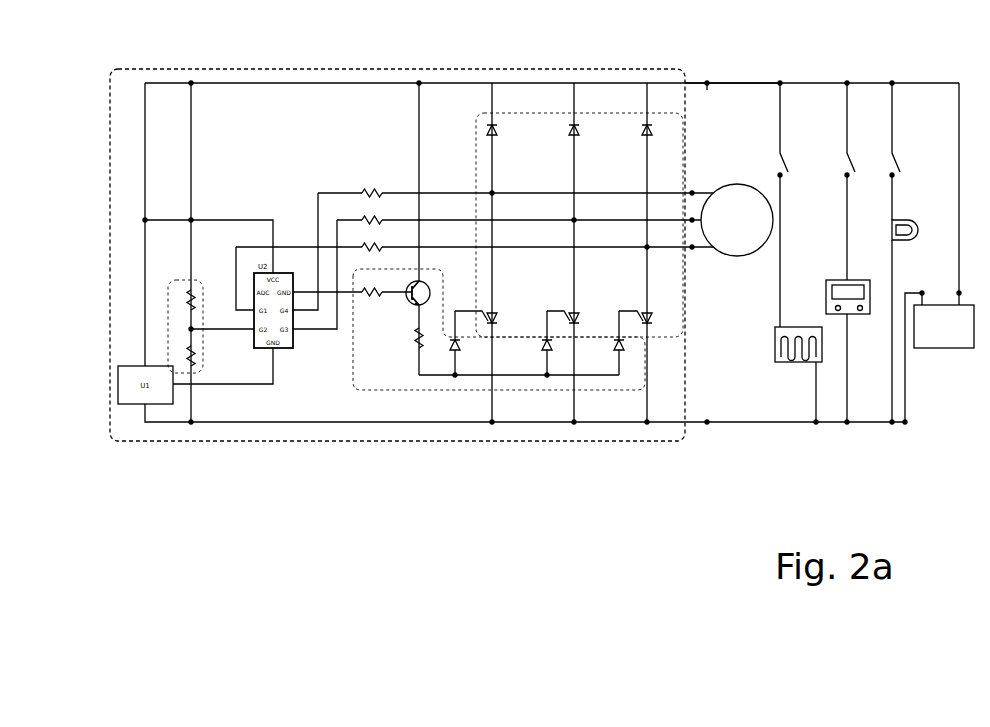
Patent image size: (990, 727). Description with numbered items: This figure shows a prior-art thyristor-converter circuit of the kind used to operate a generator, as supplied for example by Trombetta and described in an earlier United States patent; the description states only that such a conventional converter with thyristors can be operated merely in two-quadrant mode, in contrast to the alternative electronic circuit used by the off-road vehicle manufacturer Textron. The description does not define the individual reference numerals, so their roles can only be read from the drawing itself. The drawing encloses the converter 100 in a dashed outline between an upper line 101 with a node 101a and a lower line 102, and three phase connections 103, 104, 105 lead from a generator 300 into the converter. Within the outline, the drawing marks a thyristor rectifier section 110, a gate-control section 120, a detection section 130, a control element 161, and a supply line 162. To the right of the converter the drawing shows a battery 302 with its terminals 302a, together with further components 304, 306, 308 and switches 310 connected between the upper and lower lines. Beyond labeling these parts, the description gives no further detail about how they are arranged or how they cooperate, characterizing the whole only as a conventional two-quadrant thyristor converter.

The regulator circuit 100 is at (257, 68).
The positive power line 101 is at (707, 83).
The connection node 101a is at (707, 86).
The ground line 102 is at (707, 441).
The first phase line AC1 103 is at (692, 192).
The second phase line AC2 104 is at (700, 216).
The third phase line AC3 105 is at (692, 250).
The rectifier circuit 110 is at (476, 170).
The gate control circuit 120 is at (353, 350).
The voltage detection circuit 130 is at (182, 283).
The controller 161 is at (236, 278).
The supply line 162 is at (347, 82).
The three-phase AC generator 300 is at (745, 184).
The battery 302 is at (940, 348).
The battery terminals 302a is at (959, 293).
The fuse 304 is at (890, 232).
The meter 306 is at (838, 280).
The heater load 308 is at (800, 327).
The switches 310 is at (897, 166).